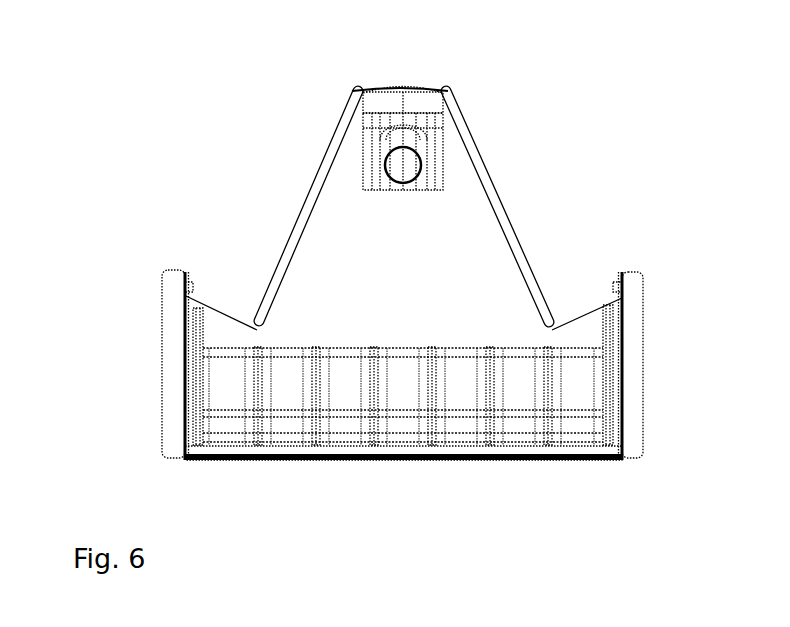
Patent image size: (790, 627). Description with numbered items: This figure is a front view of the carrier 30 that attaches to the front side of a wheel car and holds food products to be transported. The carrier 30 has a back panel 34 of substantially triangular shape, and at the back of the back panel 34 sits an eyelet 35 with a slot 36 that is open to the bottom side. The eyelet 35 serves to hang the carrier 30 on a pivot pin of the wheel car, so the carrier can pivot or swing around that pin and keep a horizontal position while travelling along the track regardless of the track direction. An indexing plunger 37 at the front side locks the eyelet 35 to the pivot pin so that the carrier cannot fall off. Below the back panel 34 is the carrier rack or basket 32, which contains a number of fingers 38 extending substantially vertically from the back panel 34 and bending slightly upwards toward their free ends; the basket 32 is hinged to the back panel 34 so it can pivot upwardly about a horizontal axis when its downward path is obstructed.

The carrier 30 is at (520, 222).
The carrier rack or basket 32 is at (598, 360).
The back panel 34 is at (330, 222).
The eyelet 35 is at (430, 142).
The slot 36 is at (407, 113).
The indexing plunger 37 is at (397, 160).
The fingers 38 is at (257, 443).